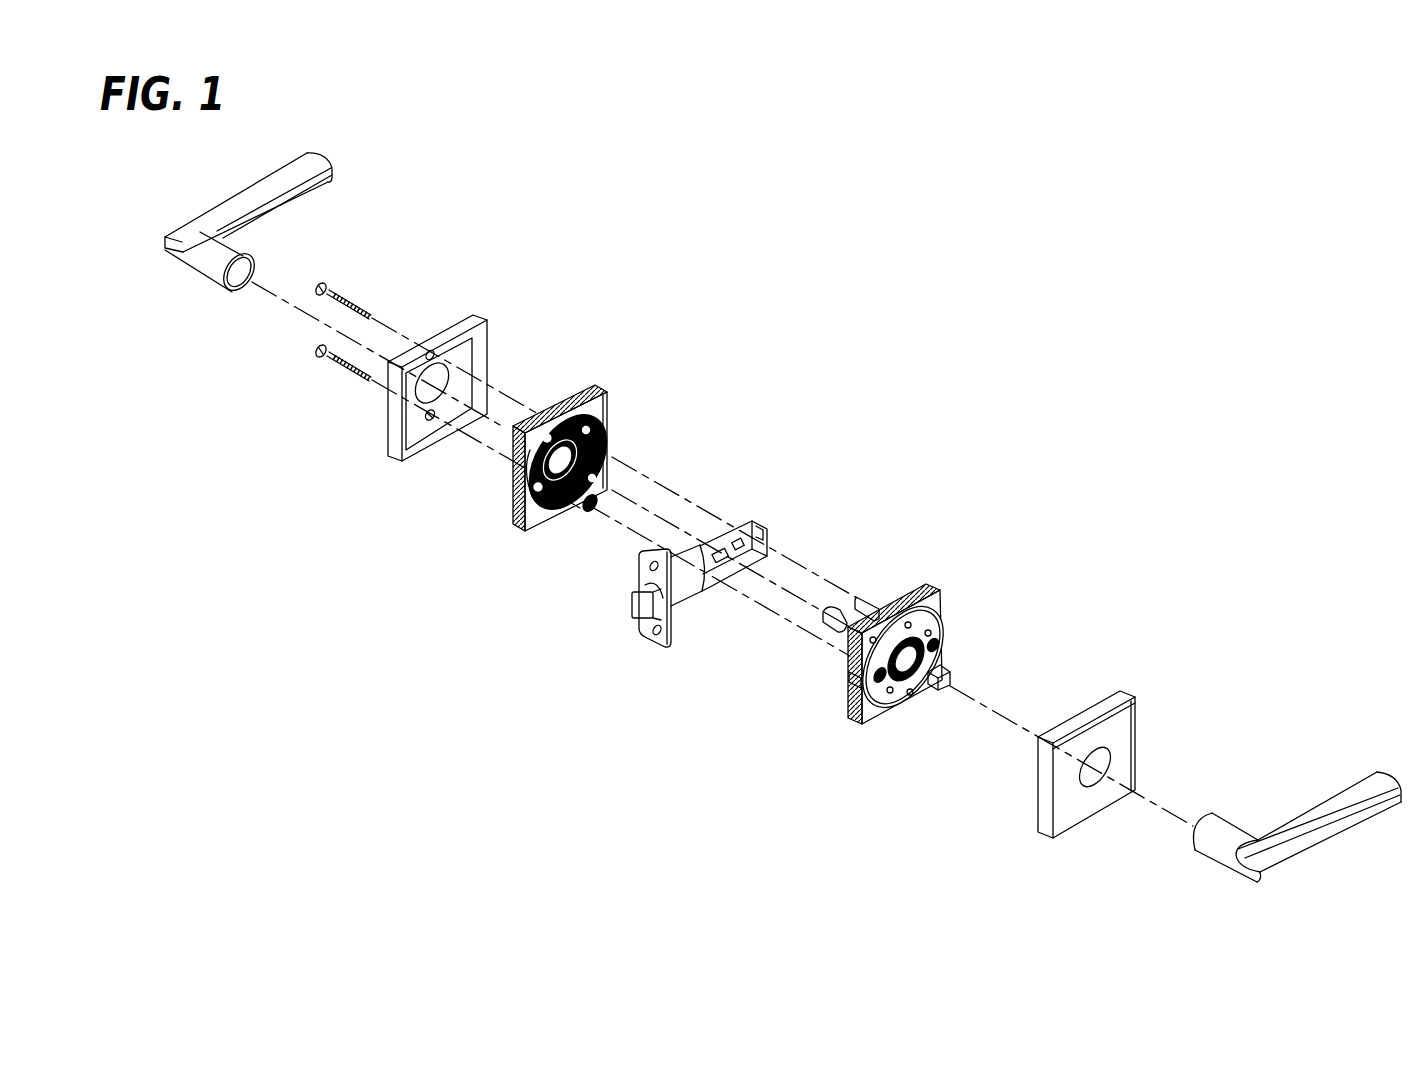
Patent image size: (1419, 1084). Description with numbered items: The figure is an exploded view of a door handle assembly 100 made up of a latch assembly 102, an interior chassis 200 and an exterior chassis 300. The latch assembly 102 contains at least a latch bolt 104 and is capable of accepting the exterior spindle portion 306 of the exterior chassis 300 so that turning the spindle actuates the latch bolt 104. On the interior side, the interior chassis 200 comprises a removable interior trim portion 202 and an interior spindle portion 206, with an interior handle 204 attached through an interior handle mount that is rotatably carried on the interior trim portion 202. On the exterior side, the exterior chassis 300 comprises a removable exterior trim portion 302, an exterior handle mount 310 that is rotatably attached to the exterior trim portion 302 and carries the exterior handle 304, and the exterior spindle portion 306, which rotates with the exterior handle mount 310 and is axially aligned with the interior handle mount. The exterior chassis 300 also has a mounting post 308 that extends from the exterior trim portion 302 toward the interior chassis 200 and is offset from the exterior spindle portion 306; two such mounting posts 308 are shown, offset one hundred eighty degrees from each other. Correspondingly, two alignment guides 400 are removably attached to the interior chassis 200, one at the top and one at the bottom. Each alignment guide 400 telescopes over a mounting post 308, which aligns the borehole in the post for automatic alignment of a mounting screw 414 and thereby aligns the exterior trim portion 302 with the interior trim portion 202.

The door handle assembly 100 is at (1151, 318).
The latch assembly 102 is at (690, 641).
The latch bolt 104 is at (633, 617).
The interior chassis 200 is at (609, 392).
The interior trim portion 202 is at (472, 316).
The interior handle 204 is at (312, 167).
The interior spindle portion 206 is at (607, 455).
The exterior chassis 300 is at (933, 583).
The exterior trim portion 302 is at (1127, 693).
The exterior handle 304 is at (1233, 872).
The exterior spindle portion 306 is at (840, 615).
The mounting post 308 is at (868, 600).
The exterior handle mount 310 is at (947, 665).
The alignment guide 400 is at (517, 470).
The mounting screw 414 is at (350, 302).